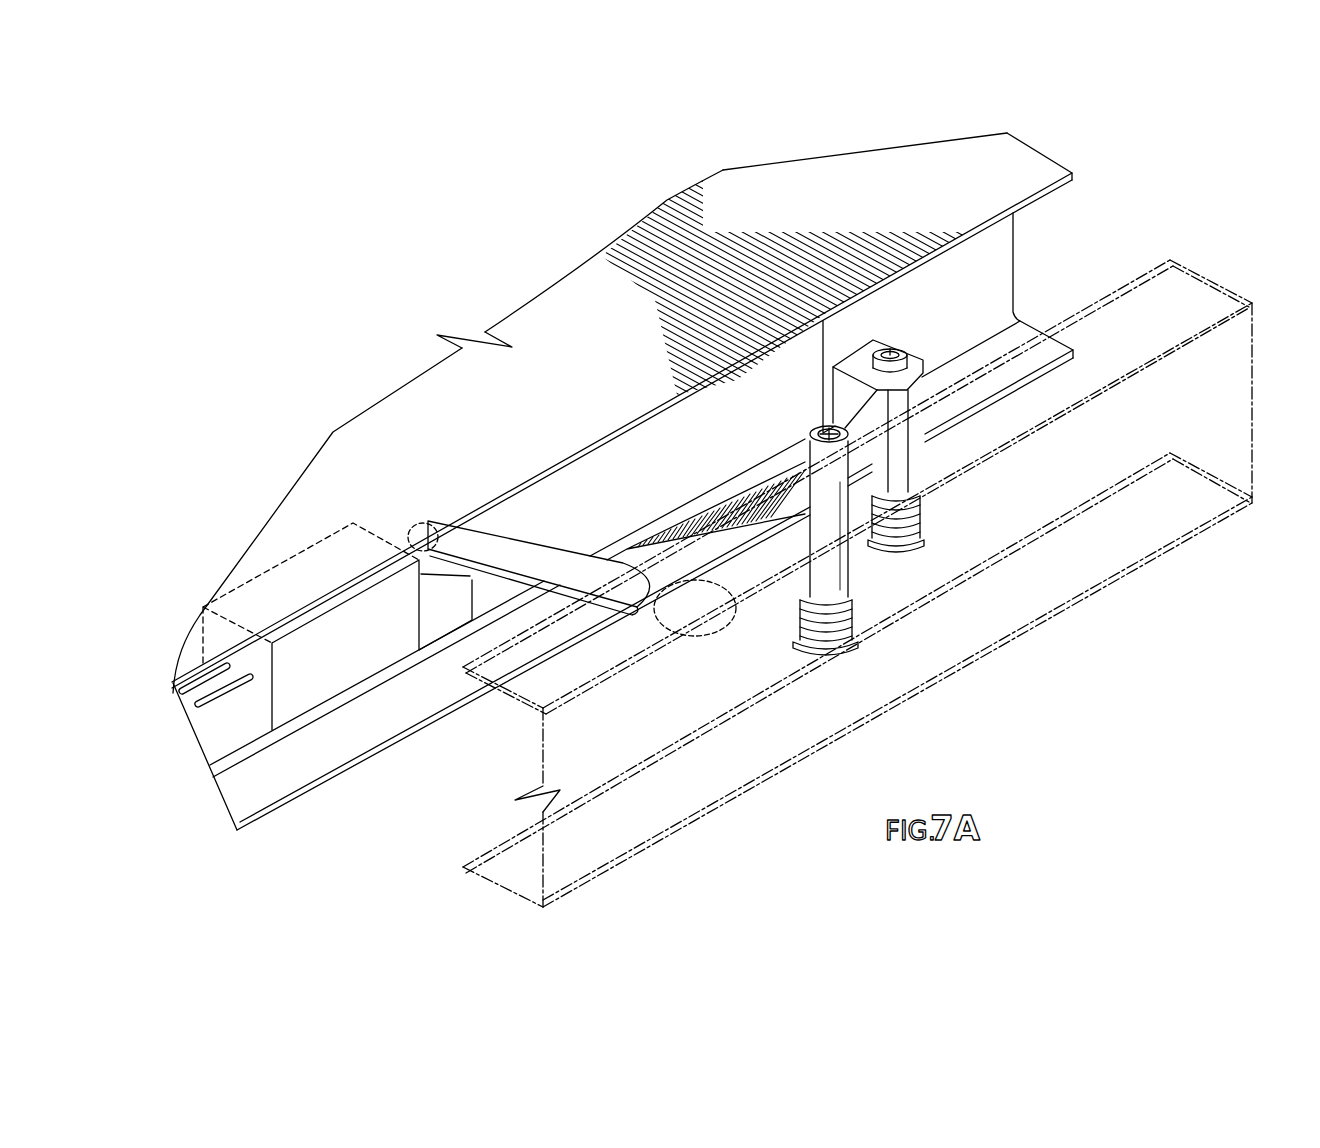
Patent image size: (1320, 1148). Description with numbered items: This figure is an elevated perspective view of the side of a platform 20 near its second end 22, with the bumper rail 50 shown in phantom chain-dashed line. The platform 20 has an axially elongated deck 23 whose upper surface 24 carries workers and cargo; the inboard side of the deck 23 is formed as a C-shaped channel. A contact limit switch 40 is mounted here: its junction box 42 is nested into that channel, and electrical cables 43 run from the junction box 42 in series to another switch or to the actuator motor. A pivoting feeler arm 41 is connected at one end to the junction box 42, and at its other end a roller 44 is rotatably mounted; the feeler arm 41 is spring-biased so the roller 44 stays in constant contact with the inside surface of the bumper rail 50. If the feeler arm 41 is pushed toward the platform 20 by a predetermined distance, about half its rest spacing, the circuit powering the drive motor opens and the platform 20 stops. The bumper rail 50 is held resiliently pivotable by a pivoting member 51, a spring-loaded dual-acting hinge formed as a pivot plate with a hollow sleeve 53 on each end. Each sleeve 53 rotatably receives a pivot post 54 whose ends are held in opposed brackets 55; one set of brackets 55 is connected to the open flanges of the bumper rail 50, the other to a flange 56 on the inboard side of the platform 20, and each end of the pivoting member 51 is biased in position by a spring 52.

The platform 20 is at (480, 247).
The second end 22 is at (1098, 193).
The deck 23 is at (412, 423).
The upper surface 24 is at (495, 397).
The contact limit switch 40 is at (332, 710).
The feeler arm 41 is at (520, 557).
The junction box 42 is at (362, 650).
The electrical cables 43 is at (205, 708).
The roller 44 is at (703, 595).
The bumper rail 50 is at (673, 793).
The pivoting member 51 is at (853, 517).
The spring 52 is at (800, 630).
The hollow sleeve 53 is at (818, 523).
The pivot post 54 is at (813, 418).
The brackets 55 is at (800, 440).
The flange 56 is at (862, 317).